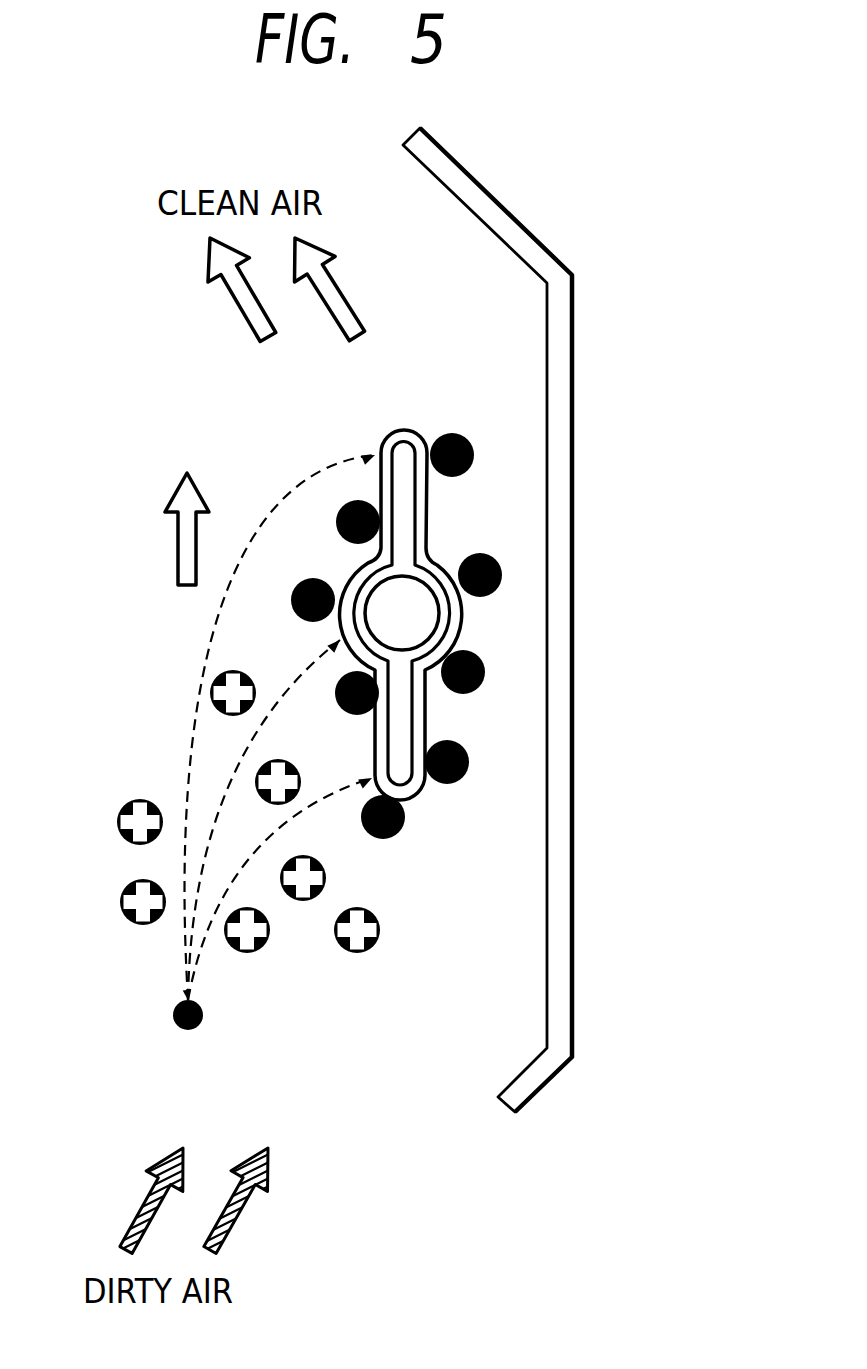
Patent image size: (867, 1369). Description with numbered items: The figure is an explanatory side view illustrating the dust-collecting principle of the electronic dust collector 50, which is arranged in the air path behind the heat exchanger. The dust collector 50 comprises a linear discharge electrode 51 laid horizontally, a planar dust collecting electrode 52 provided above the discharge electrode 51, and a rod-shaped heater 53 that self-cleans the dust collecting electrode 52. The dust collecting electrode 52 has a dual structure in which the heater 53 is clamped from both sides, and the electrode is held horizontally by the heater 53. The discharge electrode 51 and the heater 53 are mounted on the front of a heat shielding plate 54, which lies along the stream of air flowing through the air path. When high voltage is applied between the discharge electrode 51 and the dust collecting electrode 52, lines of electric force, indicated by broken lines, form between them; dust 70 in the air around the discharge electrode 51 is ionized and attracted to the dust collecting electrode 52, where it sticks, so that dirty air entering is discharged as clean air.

The electronic dust collector 50 is at (558, 620).
The linear discharge electrode 51 is at (185, 1027).
The planar dust collecting electrode 52 is at (428, 499).
The rod-shaped heater 53 is at (420, 617).
The heat shielding plate 54 is at (573, 628).
The dust 70 is at (472, 448).